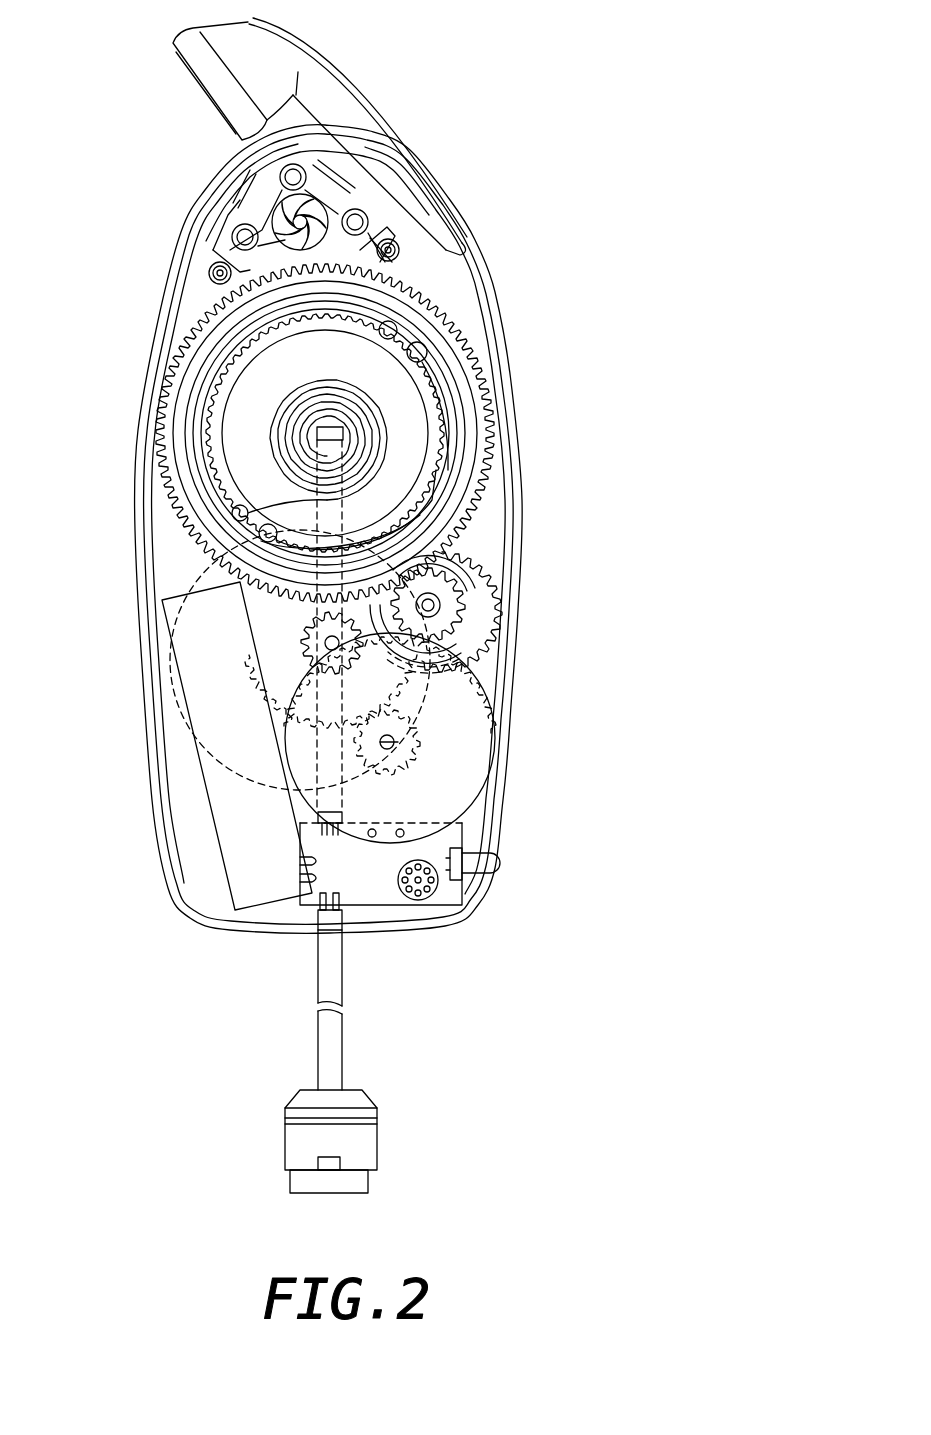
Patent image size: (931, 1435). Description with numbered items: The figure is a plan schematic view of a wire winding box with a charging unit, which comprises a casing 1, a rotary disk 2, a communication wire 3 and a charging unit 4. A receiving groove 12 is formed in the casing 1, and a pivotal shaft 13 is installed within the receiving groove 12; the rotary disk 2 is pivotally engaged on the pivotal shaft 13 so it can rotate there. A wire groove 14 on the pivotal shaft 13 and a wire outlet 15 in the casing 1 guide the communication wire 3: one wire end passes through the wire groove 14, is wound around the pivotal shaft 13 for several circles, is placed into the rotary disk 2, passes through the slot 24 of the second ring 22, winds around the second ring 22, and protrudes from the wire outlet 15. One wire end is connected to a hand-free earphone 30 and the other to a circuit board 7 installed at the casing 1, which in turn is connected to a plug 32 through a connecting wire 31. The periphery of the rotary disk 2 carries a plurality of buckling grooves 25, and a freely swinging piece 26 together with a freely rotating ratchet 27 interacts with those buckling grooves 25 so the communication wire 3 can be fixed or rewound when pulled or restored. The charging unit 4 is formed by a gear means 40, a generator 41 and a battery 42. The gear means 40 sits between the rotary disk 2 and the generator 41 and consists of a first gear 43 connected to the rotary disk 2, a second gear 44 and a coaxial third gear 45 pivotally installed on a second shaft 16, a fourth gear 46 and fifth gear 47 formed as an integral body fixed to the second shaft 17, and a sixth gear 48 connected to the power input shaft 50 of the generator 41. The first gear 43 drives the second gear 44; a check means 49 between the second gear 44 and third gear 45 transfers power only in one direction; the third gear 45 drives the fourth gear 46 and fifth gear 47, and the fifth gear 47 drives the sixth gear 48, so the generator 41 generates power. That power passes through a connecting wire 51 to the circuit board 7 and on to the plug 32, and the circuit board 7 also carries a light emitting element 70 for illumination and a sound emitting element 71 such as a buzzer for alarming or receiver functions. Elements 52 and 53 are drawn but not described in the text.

The casing 1 is at (522, 326).
The rotary disk 2 is at (240, 447).
The communication wire 3 is at (478, 373).
The charging unit 4 is at (523, 664).
The circuit board 7 is at (448, 903).
The receiving groove 12 is at (502, 517).
The pivotal shaft 13 is at (290, 432).
The wire groove 14 is at (305, 440).
The wire outlet 15 is at (467, 233).
The second shaft 16 is at (465, 545).
The second shaft 17 is at (370, 634).
The second ring 22 is at (480, 362).
The slot 24 is at (232, 540).
The buckling grooves 25 is at (195, 318).
The swinging piece 26 is at (320, 182).
The ratchet 27 is at (355, 212).
The hand-free earphone 30 is at (322, 100).
The connecting wire 31 is at (328, 1020).
The plug 32 is at (368, 1135).
The gear means 40 is at (480, 680).
The generator 41 is at (443, 783).
The battery 42 is at (240, 850).
The first gear 43 is at (497, 393).
The second gear 44 is at (440, 600).
The third gear 45 is at (478, 664).
The fourth gear 46 is at (333, 640).
The fifth gear 47 is at (300, 655).
The sixth gear 48 is at (495, 865).
The check means 49 is at (485, 628).
The power input shaft 50 is at (488, 777).
The connecting wire 51 is at (312, 882).
The guide rail 52 is at (485, 605).
The stopper 53 is at (485, 617).
The light emitting element 70 is at (468, 863).
The sound emitting element 71 is at (408, 892).